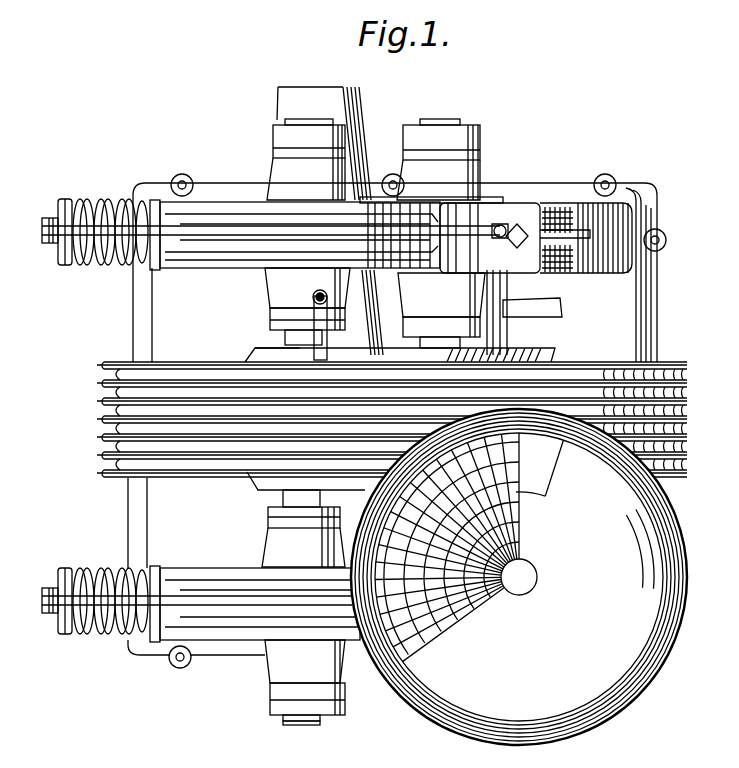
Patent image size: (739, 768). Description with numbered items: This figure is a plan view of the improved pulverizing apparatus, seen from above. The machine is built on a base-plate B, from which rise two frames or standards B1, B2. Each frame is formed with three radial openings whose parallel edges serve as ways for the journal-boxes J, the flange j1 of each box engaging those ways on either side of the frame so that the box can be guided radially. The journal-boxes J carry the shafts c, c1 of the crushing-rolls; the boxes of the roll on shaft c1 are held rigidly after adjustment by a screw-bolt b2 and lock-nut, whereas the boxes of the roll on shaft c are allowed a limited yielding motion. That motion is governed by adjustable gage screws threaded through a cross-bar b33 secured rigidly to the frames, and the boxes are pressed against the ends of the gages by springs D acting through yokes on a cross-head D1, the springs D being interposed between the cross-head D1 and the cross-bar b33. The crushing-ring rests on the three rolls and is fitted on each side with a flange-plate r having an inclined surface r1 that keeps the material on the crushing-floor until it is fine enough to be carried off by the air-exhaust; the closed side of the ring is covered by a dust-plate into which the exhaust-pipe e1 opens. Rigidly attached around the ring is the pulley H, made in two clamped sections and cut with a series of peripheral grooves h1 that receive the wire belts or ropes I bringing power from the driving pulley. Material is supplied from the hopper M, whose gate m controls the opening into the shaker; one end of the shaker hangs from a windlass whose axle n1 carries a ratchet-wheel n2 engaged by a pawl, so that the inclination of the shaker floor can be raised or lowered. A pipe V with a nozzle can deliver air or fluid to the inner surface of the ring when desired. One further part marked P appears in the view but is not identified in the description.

The frame P is at (411, 421).
The exhaust-pipe e1 is at (330, 207).
The base-plate B is at (331, 271).
The frame B1 is at (190, 570).
The frame B2 is at (584, 238).
The cross-bar b33 is at (155, 268).
The screw-bolt b2 is at (516, 232).
The belt I is at (112, 250).
The spring D is at (110, 405).
The cross-head D1 is at (49, 408).
The journal-box J is at (373, 423).
The shaft c is at (300, 120).
The shaft c1 is at (440, 112).
The pipe V is at (328, 330).
The flange j1 is at (490, 205).
The flange-plate r is at (400, 349).
The inclined surface r1 is at (252, 354).
The pulley H is at (377, 419).
The peripheral groove h1 is at (657, 419).
The axle n1 is at (272, 486).
The ratchet-wheel n2 is at (283, 514).
The hopper M is at (519, 577).
The gate m is at (519, 577).